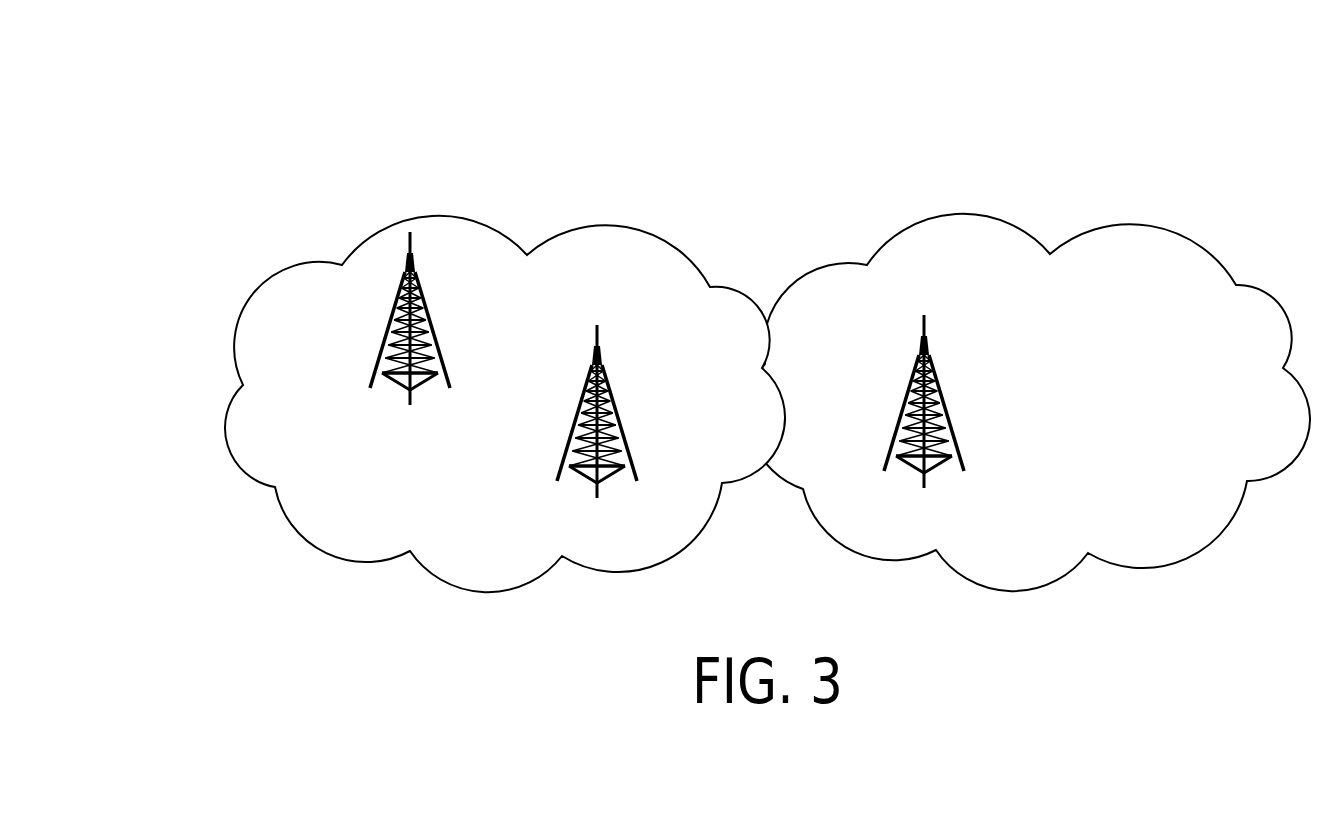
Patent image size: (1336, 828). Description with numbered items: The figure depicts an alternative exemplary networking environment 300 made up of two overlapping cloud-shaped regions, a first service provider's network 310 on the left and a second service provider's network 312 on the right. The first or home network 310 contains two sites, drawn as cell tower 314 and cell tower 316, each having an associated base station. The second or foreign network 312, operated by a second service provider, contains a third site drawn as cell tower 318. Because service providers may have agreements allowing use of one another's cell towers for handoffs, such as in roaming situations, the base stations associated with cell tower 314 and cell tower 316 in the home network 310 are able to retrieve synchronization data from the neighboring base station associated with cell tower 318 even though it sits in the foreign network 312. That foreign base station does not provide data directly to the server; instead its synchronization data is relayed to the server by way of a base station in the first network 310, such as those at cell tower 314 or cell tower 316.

The networking environment 300 is at (232, 99).
The first service provider's network 310 is at (313, 263).
The second service provider's network 312 is at (908, 226).
The cell tower 314 is at (387, 333).
The cell tower 316 is at (571, 441).
The cell tower 318 is at (900, 429).